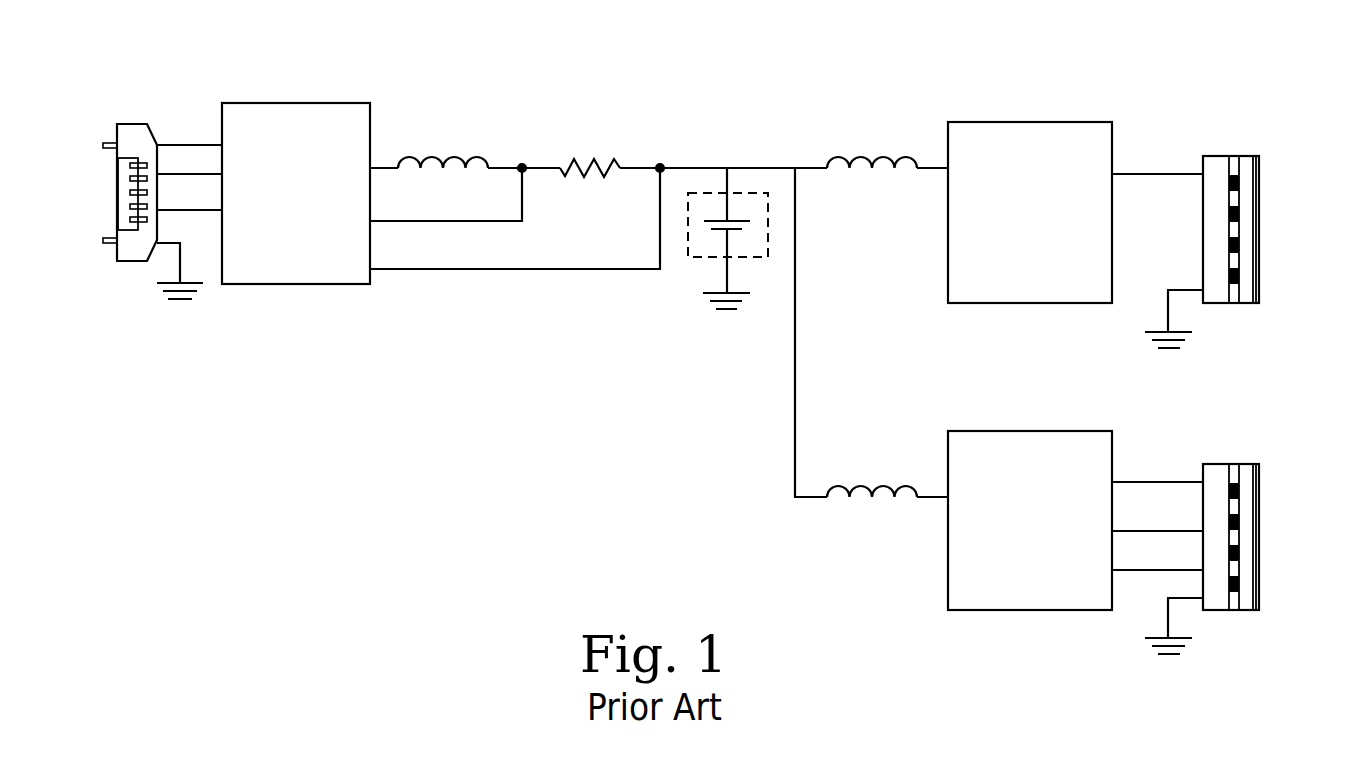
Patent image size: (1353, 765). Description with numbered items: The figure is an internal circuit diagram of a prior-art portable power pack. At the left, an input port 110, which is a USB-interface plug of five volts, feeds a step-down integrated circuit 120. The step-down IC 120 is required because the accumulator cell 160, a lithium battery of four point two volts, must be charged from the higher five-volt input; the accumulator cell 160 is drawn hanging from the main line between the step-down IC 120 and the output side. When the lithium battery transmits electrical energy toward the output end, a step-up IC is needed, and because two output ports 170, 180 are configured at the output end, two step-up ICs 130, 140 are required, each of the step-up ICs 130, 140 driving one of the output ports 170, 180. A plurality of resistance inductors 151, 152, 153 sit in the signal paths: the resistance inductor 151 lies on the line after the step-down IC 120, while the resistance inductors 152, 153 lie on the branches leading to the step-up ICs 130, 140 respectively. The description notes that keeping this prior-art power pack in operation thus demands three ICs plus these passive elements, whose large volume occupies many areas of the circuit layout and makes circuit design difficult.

The input port 110 is at (128, 124).
The step-down integrated circuit 120 is at (277, 103).
The step-up IC 130 is at (1012, 122).
The step-up IC 140 is at (1012, 431).
The resistance inductor 151 is at (590, 152).
The resistance inductor 152 is at (866, 157).
The resistance inductor 153 is at (865, 484).
The accumulator cell 160 is at (737, 193).
The output port 170 is at (1245, 156).
The output port 180 is at (1245, 464).